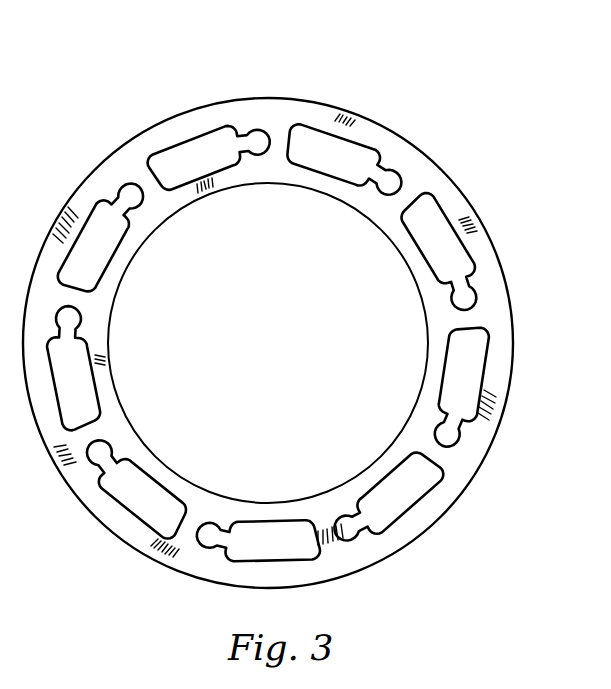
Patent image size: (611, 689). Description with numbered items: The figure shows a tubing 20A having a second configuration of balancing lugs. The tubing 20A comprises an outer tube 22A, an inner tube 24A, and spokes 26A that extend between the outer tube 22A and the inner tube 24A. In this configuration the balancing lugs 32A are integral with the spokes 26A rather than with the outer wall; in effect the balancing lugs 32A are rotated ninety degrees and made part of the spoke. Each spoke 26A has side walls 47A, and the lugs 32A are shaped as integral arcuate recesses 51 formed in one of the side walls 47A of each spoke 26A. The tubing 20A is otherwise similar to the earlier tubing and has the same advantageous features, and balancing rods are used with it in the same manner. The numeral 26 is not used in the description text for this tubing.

The tubing 20A is at (297, 343).
The outer tube 22A is at (523, 329).
The inner tube 24A is at (417, 251).
The circular hole 26 is at (413, 177).
The spokes 26A is at (279, 116).
The balancing lugs 32A is at (209, 186).
The side walls 47A is at (378, 151).
The arcuate recesses 51 is at (136, 211).